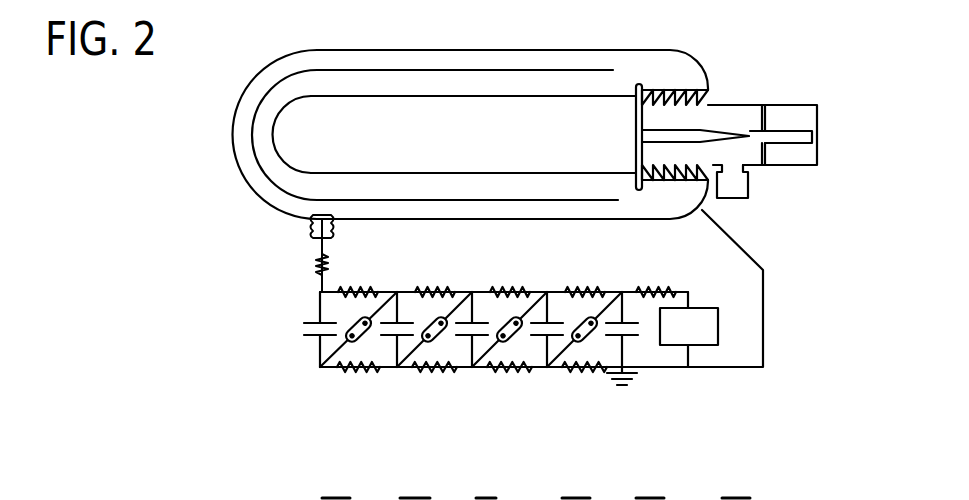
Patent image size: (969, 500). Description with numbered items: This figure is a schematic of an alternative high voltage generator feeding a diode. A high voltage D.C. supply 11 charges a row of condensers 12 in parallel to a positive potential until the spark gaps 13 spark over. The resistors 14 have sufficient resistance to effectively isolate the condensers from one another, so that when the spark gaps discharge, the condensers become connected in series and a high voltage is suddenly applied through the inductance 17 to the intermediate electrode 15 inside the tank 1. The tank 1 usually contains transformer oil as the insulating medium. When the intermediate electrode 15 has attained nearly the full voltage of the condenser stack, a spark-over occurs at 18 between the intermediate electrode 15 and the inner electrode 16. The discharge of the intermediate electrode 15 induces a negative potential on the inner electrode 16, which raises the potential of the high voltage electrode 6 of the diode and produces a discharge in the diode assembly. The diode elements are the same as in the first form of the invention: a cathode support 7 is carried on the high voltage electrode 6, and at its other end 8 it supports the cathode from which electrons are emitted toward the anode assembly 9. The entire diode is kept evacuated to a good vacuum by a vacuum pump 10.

The high pressure tank 1 is at (458, 50).
The high voltage electrode of the diode 6 is at (637, 88).
The cathode support 7 is at (676, 129).
The cathode support end 8 is at (741, 131).
The anode assembly 9 is at (766, 128).
The vacuum pump 10 is at (749, 186).
The high voltage D.C. supply 11 is at (718, 333).
The condenser 12 is at (321, 317).
The spark gap 13 is at (370, 337).
The resistor 14 is at (383, 266).
The intermediate electrode 15 is at (375, 70).
The inner electrode 16 is at (507, 96).
The inductance 17 is at (318, 266).
The spark-over location 18 is at (263, 135).